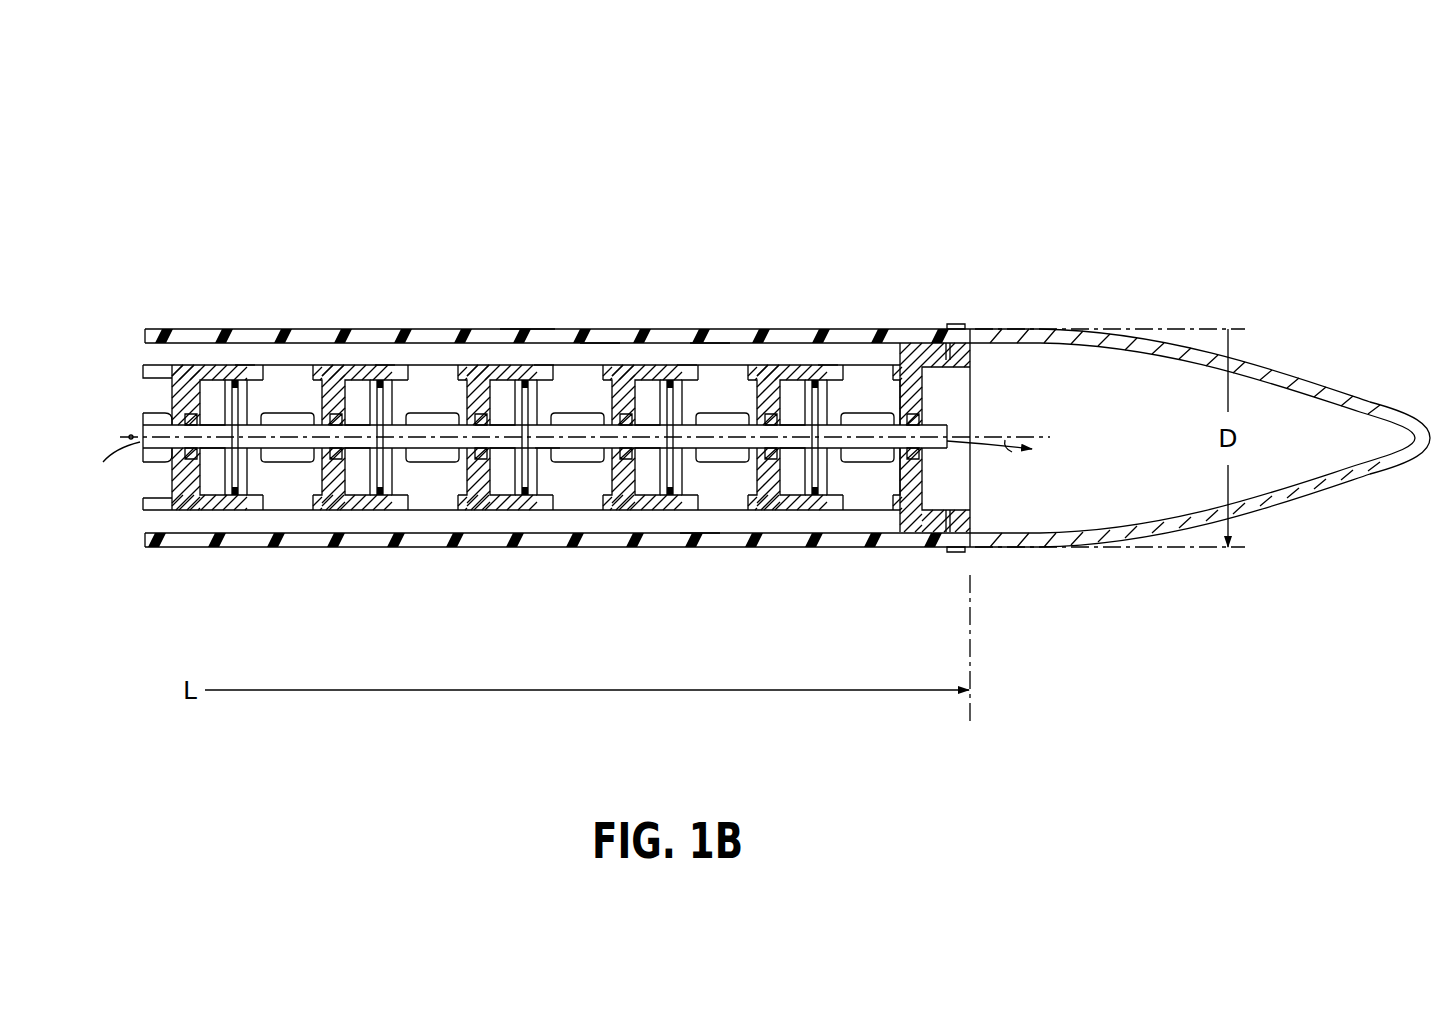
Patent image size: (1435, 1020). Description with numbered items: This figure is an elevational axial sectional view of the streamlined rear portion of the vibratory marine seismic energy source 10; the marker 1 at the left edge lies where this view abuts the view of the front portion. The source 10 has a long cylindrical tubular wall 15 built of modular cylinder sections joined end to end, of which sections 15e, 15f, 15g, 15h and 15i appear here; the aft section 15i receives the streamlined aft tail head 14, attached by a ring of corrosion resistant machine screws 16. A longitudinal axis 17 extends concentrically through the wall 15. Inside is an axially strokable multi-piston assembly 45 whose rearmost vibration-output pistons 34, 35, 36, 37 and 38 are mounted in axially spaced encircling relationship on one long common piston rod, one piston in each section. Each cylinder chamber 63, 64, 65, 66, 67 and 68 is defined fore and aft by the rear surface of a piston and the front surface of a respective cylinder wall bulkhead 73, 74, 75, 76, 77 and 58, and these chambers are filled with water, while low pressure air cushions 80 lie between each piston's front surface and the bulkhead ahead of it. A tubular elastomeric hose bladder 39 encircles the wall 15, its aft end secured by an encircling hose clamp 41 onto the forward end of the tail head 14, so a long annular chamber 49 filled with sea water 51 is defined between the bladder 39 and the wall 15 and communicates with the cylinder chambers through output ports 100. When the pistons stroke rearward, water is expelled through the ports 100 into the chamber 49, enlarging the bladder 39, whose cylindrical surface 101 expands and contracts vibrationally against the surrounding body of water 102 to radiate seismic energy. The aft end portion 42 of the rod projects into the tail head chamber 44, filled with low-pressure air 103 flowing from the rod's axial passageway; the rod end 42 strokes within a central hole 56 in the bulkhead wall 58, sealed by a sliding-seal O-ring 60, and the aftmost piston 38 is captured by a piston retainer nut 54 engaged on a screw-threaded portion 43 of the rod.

The linear actuator / motor assembly 1 is at (131, 433).
The vibratory marine seismic energy source 10 is at (527, 213).
The streamlined aft tail head 14 is at (1303, 377).
The long cylindrical tubular wall 15 is at (398, 510).
The cylinder section 15e is at (245, 365).
The cylinder section 15f is at (385, 365).
The cylinder section 15g is at (544, 365).
The cylinder section 15h is at (687, 365).
The aft tubular section 15i is at (828, 365).
The corrosion resistant machine screws 16 is at (946, 352).
The longitudinal axis 17 is at (1015, 437).
The vibration-output piston 34 is at (248, 398).
The vibration-output piston 35 is at (393, 398).
The vibration-output piston 36 is at (538, 398).
The vibration-output piston 37 is at (683, 398).
The aftmost vibration-output piston 38 is at (828, 398).
The elastomeric hose bladder 39 is at (153, 329).
The hose clamp 41 is at (950, 327).
The aft end portion of piston rod 42 is at (958, 424).
The screw-threaded portion of rod 43 is at (832, 436).
The tail head chamber 44 is at (1097, 449).
The multi-piston assembly 45 is at (538, 455).
The annular bladder chamber 49 is at (710, 358).
The sea water 51 is at (600, 368).
The piston retainer nut 54 is at (813, 495).
The central hole 56 is at (946, 479).
The bulkhead wall 58 is at (922, 510).
The sliding-seal O-ring 60 is at (946, 396).
The cylinder chamber 63 is at (129, 486).
The cylinder chamber 64 is at (263, 486).
The cylinder chamber 65 is at (411, 486).
The cylinder chamber 66 is at (560, 486).
The cylinder chamber 67 is at (705, 486).
The cylinder chamber 68 is at (849, 486).
The cylinder wall bulkhead 73 is at (207, 488).
The cylinder wall bulkhead 74 is at (360, 488).
The cylinder wall bulkhead 75 is at (500, 488).
The cylinder wall bulkhead 76 is at (652, 487).
The cylinder wall bulkhead 77 is at (795, 487).
The low pressure air cushions 80 is at (213, 390).
The output ports 100 is at (310, 372).
The cylindrical vibratory surface 101 is at (328, 329).
The surrounding body of water 102 is at (780, 190).
The low-pressure air 103 is at (1012, 452).